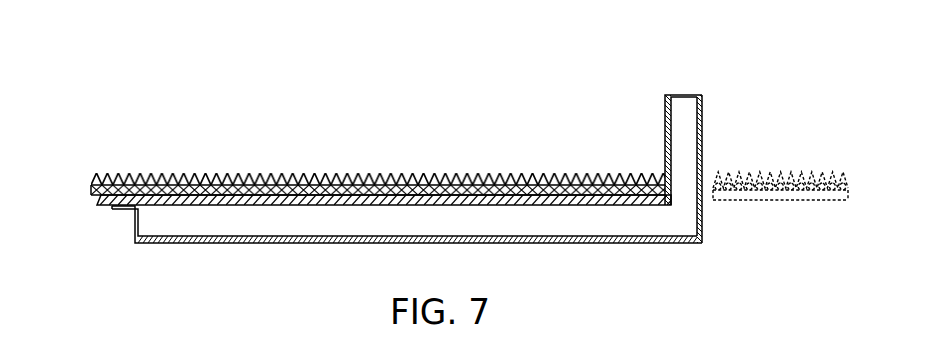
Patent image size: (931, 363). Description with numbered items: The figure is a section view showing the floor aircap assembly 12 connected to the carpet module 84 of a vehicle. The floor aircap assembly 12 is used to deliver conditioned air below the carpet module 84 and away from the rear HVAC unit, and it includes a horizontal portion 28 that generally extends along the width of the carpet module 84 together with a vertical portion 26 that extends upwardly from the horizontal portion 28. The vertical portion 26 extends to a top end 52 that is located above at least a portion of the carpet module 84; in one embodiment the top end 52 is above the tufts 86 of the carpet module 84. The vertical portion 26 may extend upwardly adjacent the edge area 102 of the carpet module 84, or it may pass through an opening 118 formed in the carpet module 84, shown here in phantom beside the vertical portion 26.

The floor aircap assembly 12 is at (435, 186).
The vertical portion 26 is at (702, 123).
The horizontal portion 28 is at (303, 244).
The top end 52 is at (668, 95).
The carpet module 84 is at (381, 143).
The tufts 86 is at (392, 177).
The edge area 102 is at (663, 178).
The opening 118 is at (778, 229).